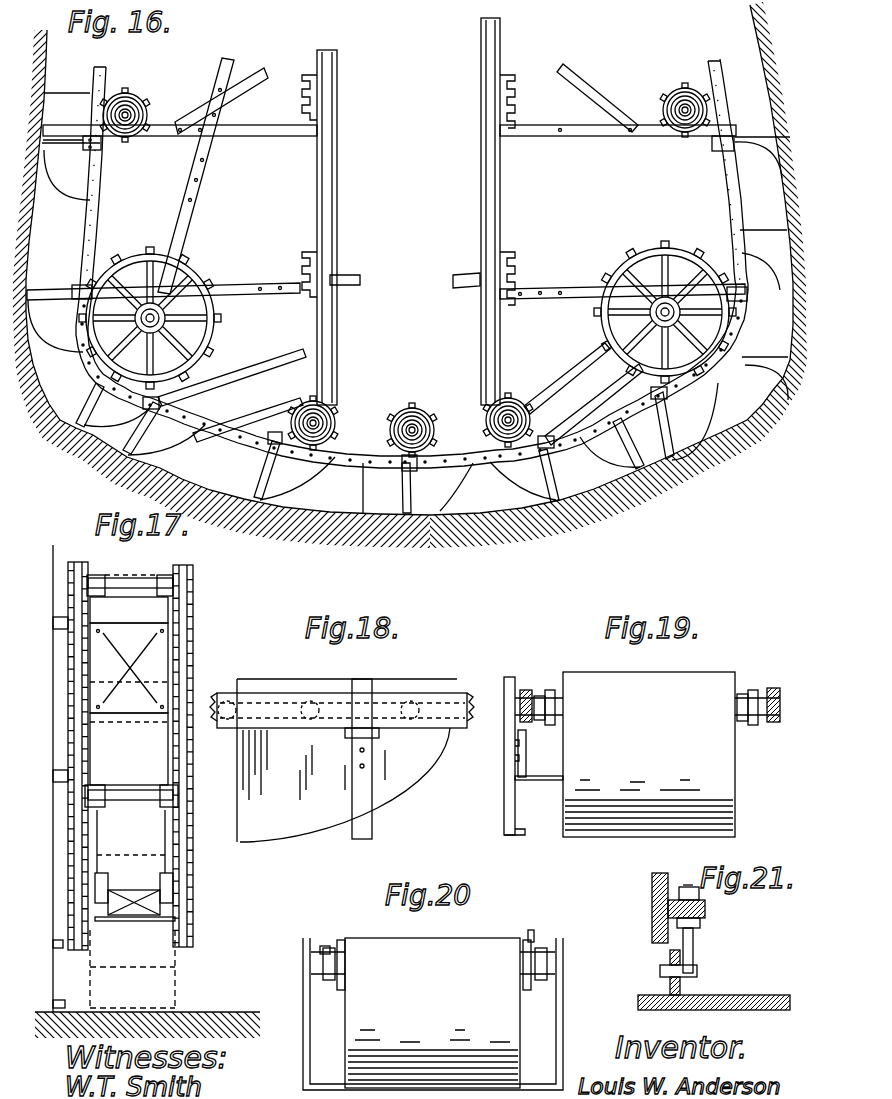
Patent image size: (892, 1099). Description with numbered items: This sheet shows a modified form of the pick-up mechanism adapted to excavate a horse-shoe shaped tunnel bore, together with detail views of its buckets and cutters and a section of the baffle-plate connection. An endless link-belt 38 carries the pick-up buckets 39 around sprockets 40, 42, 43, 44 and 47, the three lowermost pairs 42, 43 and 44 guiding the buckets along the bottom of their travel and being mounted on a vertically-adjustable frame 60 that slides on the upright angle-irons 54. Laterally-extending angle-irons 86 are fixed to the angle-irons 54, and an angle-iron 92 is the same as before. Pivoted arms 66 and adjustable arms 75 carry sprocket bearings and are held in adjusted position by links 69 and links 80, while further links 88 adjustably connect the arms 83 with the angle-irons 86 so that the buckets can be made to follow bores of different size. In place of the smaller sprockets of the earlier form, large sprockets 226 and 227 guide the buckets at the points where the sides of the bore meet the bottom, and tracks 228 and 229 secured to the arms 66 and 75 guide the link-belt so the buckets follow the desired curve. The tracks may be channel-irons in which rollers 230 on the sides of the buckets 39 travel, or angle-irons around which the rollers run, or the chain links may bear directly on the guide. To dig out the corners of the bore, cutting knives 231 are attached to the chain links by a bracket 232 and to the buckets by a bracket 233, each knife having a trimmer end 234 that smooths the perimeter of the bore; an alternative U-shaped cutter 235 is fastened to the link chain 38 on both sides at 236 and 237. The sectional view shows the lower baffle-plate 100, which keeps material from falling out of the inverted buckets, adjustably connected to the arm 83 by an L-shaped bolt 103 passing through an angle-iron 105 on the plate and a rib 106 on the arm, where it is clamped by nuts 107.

In FIG. 16, the link-belt 38 is at (94, 206).
In FIG. 17, the link-belt 38 is at (195, 859).
In FIG. 16, the buckets 39 is at (66, 93).
In FIG. 17, the buckets 39 is at (188, 978).
In FIG. 18, the buckets 39 is at (347, 760).
In FIG. 19, the buckets 39 is at (649, 754).
In FIG. 20, the buckets 39 is at (432, 1013).
In FIG. 16, the sprockets 40 is at (666, 97).
In FIG. 16, the sprockets 42 is at (488, 405).
In FIG. 16, the sprockets 43 is at (409, 396).
In FIG. 16, the sprockets 44 is at (335, 407).
In FIG. 16, the sprockets 47 is at (139, 101).
In FIG. 16, the vertical angle-irons 54 is at (483, 217).
In FIG. 16, the vertically-adjustable frame 60 is at (343, 346).
In FIG. 16, the arms 66 is at (564, 372).
In FIG. 16, the links 69 is at (562, 289).
In FIG. 16, the adjustable arms 75 is at (222, 420).
In FIG. 16, the links 80 is at (252, 290).
In FIG. 21, the adjustable arms 83 is at (652, 930).
In FIG. 16, the angle-irons 86 is at (255, 137).
In FIG. 16, the links 88 is at (183, 220).
In FIG. 16, the angle-iron 92 is at (571, 137).
In FIG. 21, the baffle-plate 100 is at (762, 996).
In FIG. 21, the L-shaped bolt 103 is at (693, 952).
In FIG. 21, the angle-iron 105 is at (697, 972).
In FIG. 21, the rib 106 is at (668, 904).
In FIG. 21, the clamping nuts 107 is at (700, 923).
In FIG. 16, the large sprocket 226 is at (640, 250).
In FIG. 16, the large sprocket 227 is at (197, 262).
In FIG. 16, the track 228 is at (549, 396).
In FIG. 16, the track 229 is at (300, 398).
In FIG. 18, the track 229 is at (468, 693).
In FIG. 19, the track 229 is at (527, 690).
In FIG. 20, the track 229 is at (343, 940).
In FIG. 18, the rollers 230 is at (330, 695).
In FIG. 19, the rollers 230 is at (553, 690).
In FIG. 16, the cutting knives 231 is at (670, 452).
In FIG. 17, the cutting knives 231 is at (65, 977).
In FIG. 18, the cutting knives 231 is at (364, 808).
In FIG. 19, the cutting knives 231 is at (510, 800).
In FIG. 19, the bracket 232 is at (528, 742).
In FIG. 19, the bracket 233 is at (545, 778).
In FIG. 19, the trimmer end 234 is at (522, 836).
In FIG. 20, the cutter 235 is at (564, 1010).
In FIG. 20, the securing point 236 is at (325, 946).
In FIG. 20, the securing point 237 is at (522, 968).